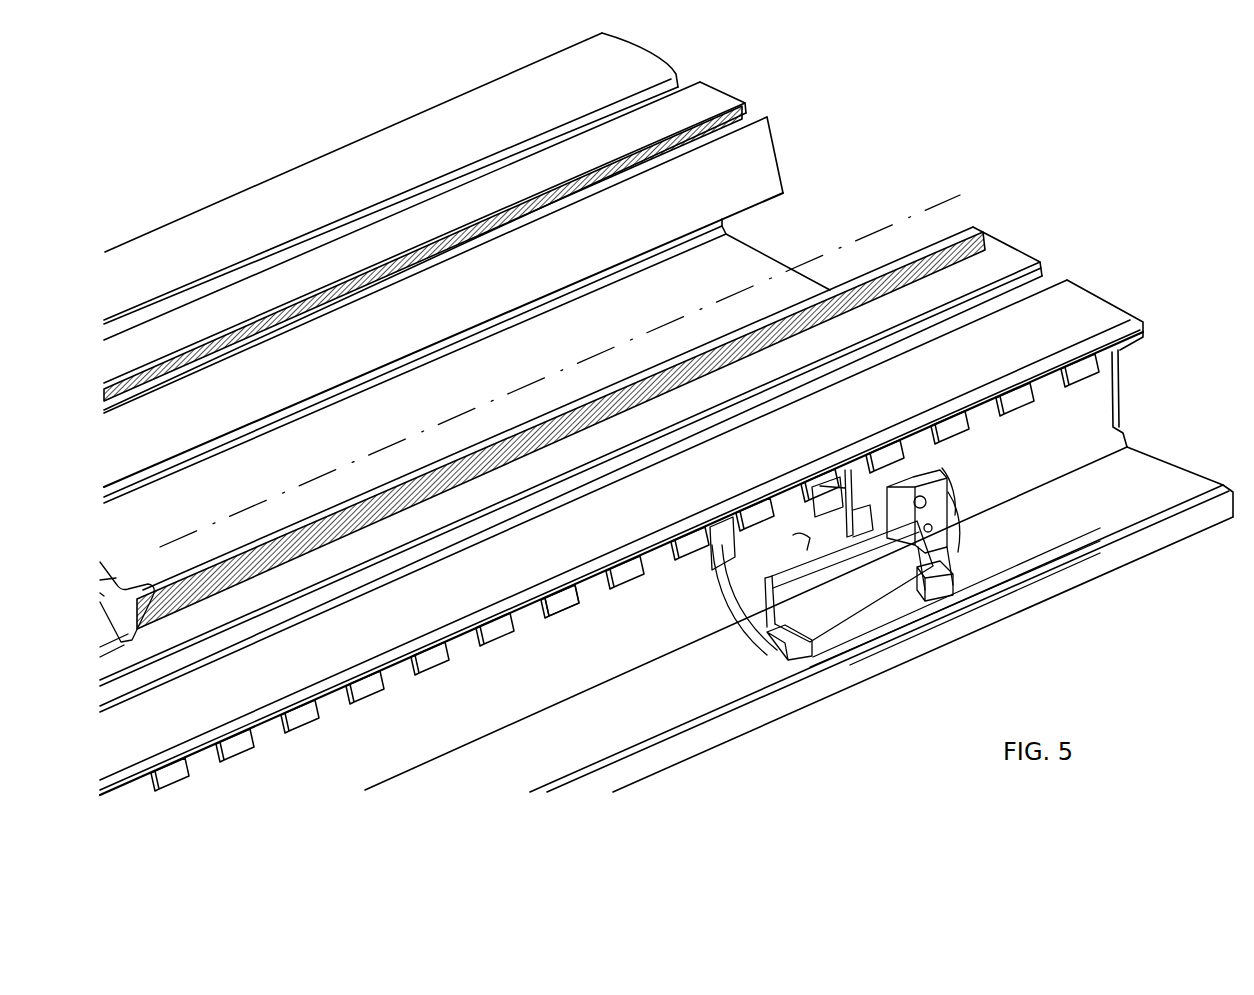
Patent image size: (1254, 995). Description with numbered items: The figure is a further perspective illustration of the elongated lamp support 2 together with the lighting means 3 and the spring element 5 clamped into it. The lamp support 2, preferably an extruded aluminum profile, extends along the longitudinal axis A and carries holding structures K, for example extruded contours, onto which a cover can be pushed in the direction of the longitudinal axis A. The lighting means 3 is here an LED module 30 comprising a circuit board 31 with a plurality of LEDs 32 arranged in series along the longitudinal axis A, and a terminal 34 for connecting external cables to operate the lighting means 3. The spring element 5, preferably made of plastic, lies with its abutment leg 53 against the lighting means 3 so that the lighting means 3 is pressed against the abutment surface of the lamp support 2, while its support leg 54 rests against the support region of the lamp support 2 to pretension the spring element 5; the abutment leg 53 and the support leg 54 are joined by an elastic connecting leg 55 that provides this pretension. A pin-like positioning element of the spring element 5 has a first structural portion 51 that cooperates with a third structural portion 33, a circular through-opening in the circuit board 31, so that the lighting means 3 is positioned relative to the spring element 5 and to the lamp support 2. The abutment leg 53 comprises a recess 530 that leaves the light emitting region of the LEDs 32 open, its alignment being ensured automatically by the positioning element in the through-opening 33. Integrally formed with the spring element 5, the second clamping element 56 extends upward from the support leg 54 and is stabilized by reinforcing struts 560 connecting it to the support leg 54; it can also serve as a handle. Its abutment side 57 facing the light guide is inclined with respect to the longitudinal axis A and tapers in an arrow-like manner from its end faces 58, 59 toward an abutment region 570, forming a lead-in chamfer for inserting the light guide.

The longitudinal axis A is at (921, 211).
The holding structures K is at (1040, 287).
The lamp support 2 is at (1000, 258).
The lighting means 3 is at (1122, 394).
The LED module 30 is at (1124, 420).
The circuit board 31 is at (512, 702).
The LEDs 32 is at (563, 612).
The third structural portion 33 is at (797, 548).
The terminal 34 is at (952, 497).
The spring element 5 is at (876, 536).
The first structural portion 51 is at (762, 528).
The abutment leg 53 is at (730, 553).
The support leg 54 is at (866, 622).
The connecting leg 55 is at (767, 613).
The second clamping element 56 is at (783, 592).
The abutment side 57 is at (866, 529).
The end face 58 is at (933, 551).
The end face 59 is at (762, 650).
The recess 530 is at (778, 531).
The reinforcing struts 560 is at (958, 578).
The abutment region 570 is at (837, 532).